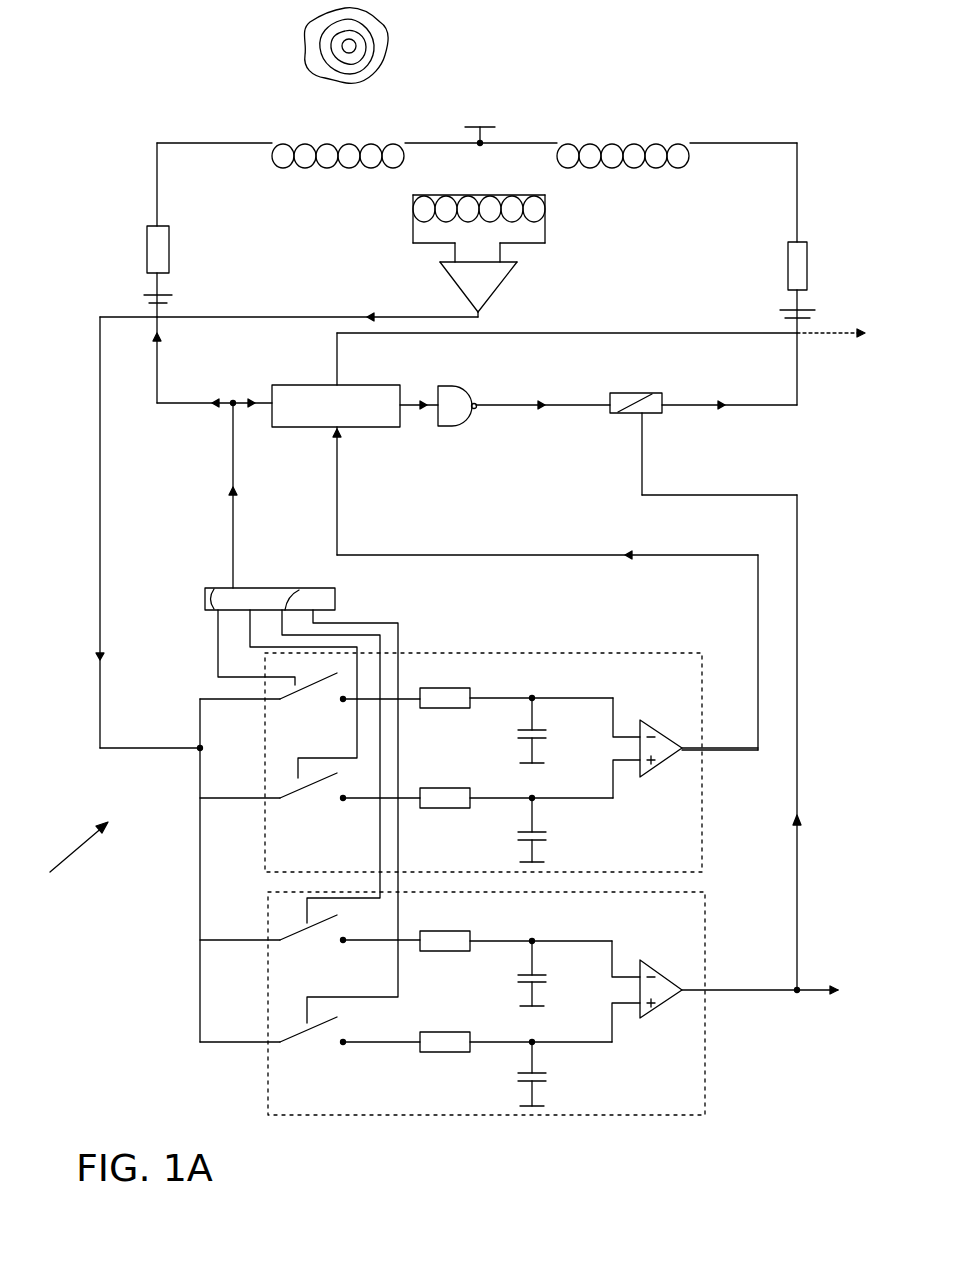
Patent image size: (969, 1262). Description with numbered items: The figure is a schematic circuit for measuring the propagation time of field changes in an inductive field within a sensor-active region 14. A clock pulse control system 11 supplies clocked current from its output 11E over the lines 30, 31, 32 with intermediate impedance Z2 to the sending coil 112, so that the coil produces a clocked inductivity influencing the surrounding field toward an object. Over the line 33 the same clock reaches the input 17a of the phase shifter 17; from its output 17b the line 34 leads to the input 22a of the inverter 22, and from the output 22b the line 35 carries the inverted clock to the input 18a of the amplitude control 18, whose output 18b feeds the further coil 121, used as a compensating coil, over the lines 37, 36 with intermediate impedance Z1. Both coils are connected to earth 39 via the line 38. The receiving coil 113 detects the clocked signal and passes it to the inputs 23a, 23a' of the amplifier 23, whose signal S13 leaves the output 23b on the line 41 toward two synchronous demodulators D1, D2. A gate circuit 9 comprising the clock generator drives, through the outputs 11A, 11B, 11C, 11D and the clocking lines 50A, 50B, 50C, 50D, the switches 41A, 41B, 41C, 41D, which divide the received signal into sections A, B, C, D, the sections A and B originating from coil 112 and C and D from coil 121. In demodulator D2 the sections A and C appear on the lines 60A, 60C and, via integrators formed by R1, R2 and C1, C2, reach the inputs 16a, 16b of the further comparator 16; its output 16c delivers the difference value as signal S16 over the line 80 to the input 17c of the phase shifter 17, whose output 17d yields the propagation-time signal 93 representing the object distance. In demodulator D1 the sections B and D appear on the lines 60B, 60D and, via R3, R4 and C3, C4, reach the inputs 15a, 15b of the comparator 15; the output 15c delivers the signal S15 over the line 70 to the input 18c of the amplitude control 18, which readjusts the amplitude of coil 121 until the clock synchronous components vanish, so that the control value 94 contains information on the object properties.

The gate circuit 9 is at (69, 858).
The sensor-active region 14 is at (343, 115).
The line 38 is at (443, 142).
The earth 39 is at (490, 128).
The further coil 121 is at (672, 144).
The line 32 is at (173, 146).
The sending coil 112 is at (322, 165).
The receiving coil 113 is at (518, 196).
The line 36 is at (795, 188).
The impedance Z2 is at (150, 292).
The impedance Z1 is at (818, 255).
The amplifier 23 is at (498, 277).
The input of amplifier 23a is at (397, 261).
The input of amplifier 23a' is at (557, 258).
The output of amplifier 23b is at (480, 312).
The signal S13 is at (100, 340).
The line 41 is at (200, 317).
The signal for the propagation time 93 is at (855, 336).
The line 31 is at (165, 405).
The line 33 is at (250, 400).
The line 30 is at (233, 455).
The phase shifter 17 is at (347, 415).
The input of phase shifter 17a is at (272, 395).
The output of phase shifter 17b is at (400, 417).
The input of phase shifter 17c is at (345, 430).
The output of phase shifter 17d is at (335, 383).
The line 34 is at (413, 400).
The inverter 22 is at (455, 392).
The input of inverter 22a is at (440, 395).
The output of inverter 22b is at (448, 426).
The line 35 is at (530, 403).
The amplitude control 18 is at (642, 393).
The input of amplitude control 18a is at (612, 397).
The output of amplitude control 18b is at (662, 413).
The input of amplitude control 18c is at (638, 418).
The line 37 is at (773, 408).
The line 80 is at (475, 555).
The control signal S16 is at (652, 552).
The line 70 is at (797, 700).
The control signal S15 is at (797, 870).
The clock pulse control system 11 is at (338, 600).
The output 11A is at (205, 593).
The output 11B is at (292, 600).
The output 11C is at (245, 612).
The output 11D is at (318, 623).
The output 11E is at (258, 588).
The clocking line 50A is at (218, 670).
The clocking line 50B is at (377, 895).
The clocking line 50C is at (357, 752).
The clocking line 50D is at (397, 990).
The synchronous demodulator D2 is at (562, 648).
The synchronous demodulator D1 is at (715, 1098).
The switch 41A is at (212, 707).
The switch 41B is at (247, 913).
The switch 41C is at (212, 806).
The switch 41D is at (245, 1017).
The section A is at (350, 679).
The section B is at (350, 929).
The section C is at (350, 784).
The section D is at (350, 1031).
The integrator resistor R1 is at (440, 686).
The integrator resistor R2 is at (448, 788).
The integrator resistor R3 is at (455, 930).
The integrator resistor R4 is at (448, 1032).
The integrator capacitor C1 is at (546, 738).
The integrator capacitor C2 is at (546, 833).
The integrator capacitor C3 is at (546, 982).
The integrator capacitor C4 is at (546, 1075).
The line 60A is at (410, 705).
The line 60B is at (405, 950).
The line 60C is at (405, 808).
The line 60D is at (385, 1050).
The further comparator 16 is at (668, 738).
The input of comparator 16a is at (630, 720).
The input of comparator 16b is at (640, 770).
The output of comparator 16c is at (688, 752).
The comparator 15 is at (668, 978).
The input of comparator 15a is at (630, 962).
The input of comparator 15b is at (640, 1010).
The output of comparator 15c is at (688, 985).
The control value 94 is at (822, 992).